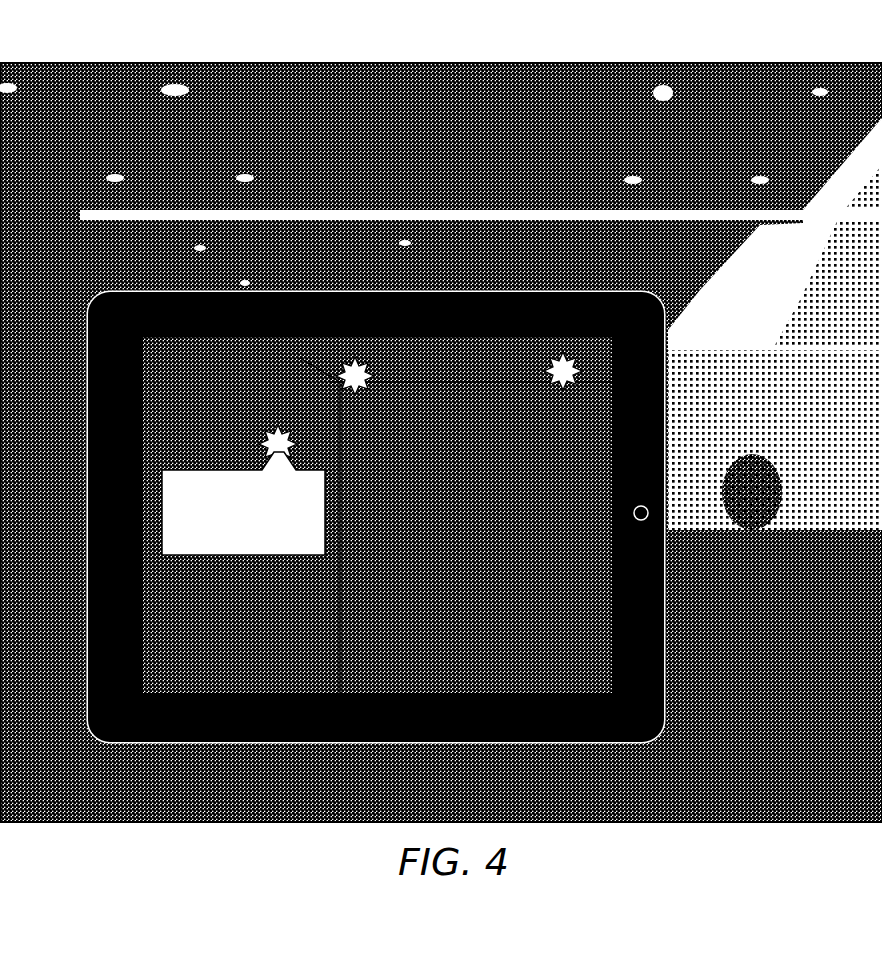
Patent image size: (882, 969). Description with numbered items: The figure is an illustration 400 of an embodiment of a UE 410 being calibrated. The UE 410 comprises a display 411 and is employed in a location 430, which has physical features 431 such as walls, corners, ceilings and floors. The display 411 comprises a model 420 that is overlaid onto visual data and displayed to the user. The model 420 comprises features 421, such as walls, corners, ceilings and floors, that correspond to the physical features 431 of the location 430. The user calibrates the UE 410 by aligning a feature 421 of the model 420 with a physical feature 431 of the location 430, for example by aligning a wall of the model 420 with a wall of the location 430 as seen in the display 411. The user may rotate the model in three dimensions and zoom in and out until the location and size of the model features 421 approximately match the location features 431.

The illustration 400 is at (184, 46).
The location 430 is at (572, 63).
The UE 410 is at (666, 312).
The display 411 is at (473, 345).
The model 420 is at (456, 408).
The features 421 is at (350, 448).
The physical features 431 is at (333, 418).